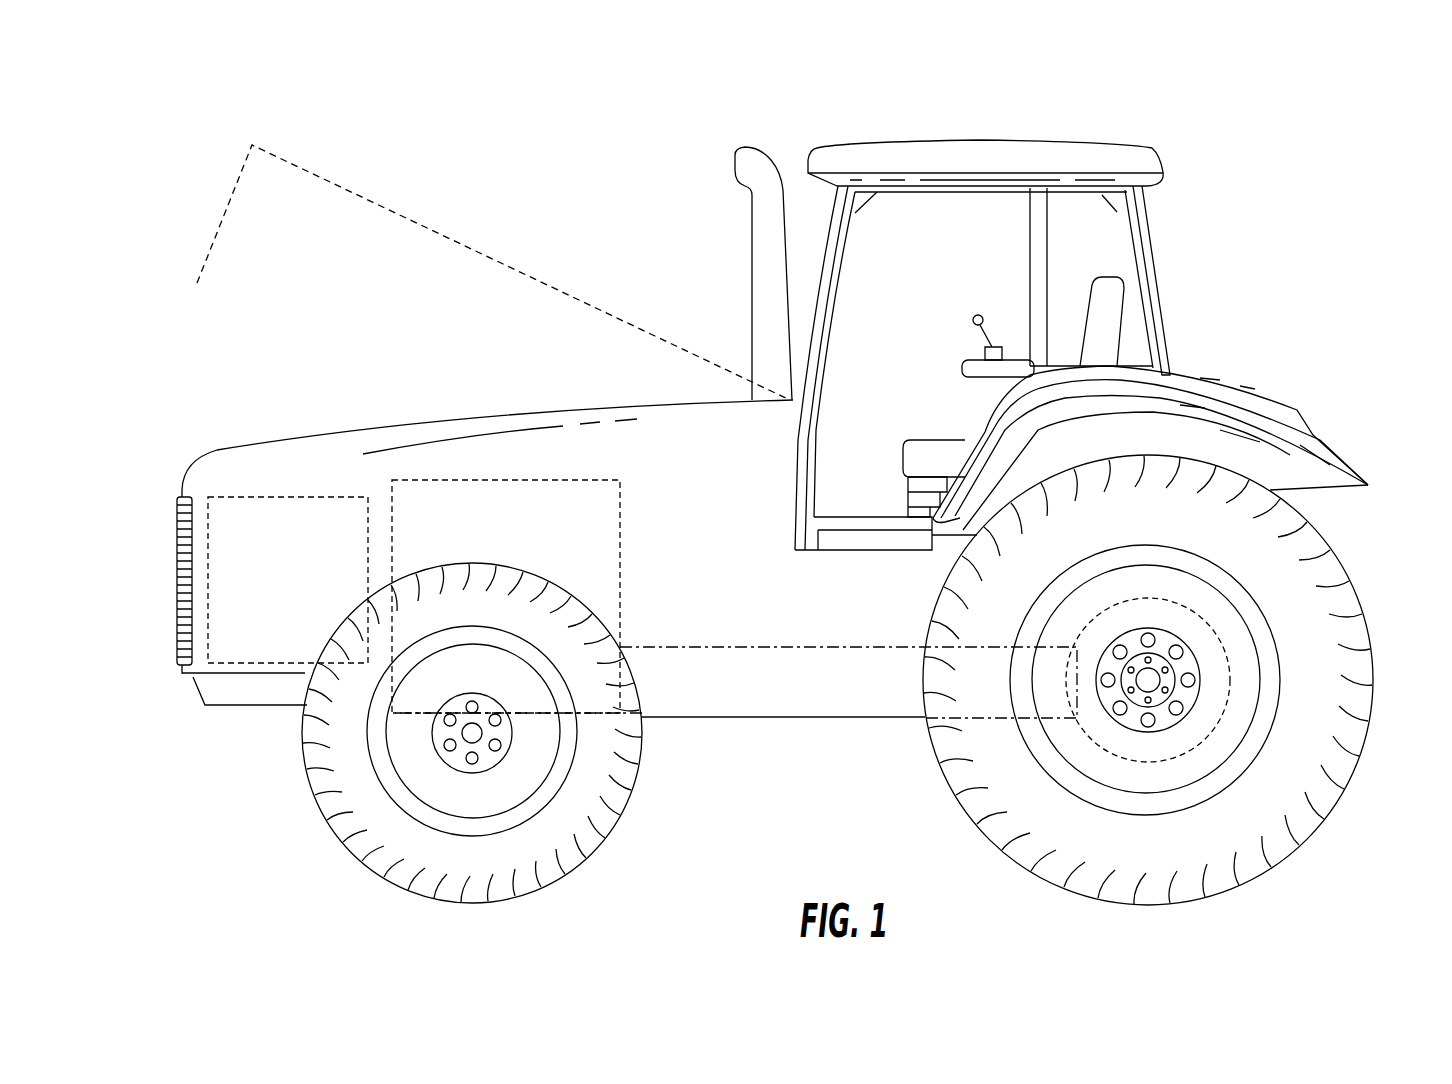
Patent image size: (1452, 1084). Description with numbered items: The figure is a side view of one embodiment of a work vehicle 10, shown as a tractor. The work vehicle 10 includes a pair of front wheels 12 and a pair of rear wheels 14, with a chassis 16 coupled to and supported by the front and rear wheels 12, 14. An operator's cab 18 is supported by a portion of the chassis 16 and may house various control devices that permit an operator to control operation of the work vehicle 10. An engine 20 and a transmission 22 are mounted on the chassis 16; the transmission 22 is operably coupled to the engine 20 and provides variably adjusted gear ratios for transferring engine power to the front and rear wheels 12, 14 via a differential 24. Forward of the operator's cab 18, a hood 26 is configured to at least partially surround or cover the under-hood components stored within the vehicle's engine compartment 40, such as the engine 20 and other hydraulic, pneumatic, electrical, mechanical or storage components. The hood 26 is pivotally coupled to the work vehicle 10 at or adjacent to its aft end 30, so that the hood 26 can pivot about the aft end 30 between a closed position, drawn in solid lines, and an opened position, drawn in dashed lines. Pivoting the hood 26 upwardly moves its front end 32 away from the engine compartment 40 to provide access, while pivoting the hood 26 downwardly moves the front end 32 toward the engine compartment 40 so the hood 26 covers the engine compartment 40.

The work vehicle 10 is at (1298, 107).
The front wheels 12 is at (302, 752).
The rear wheels 14 is at (1372, 717).
The chassis 16 is at (725, 717).
The operator's cab 18 is at (1160, 287).
The engine 20 is at (463, 478).
The transmission 22 is at (778, 645).
The differential 24 is at (1214, 725).
The hood 26 is at (420, 222).
The aft end 30 is at (675, 313).
The front end 32 is at (200, 237).
The engine compartment 40 is at (687, 473).